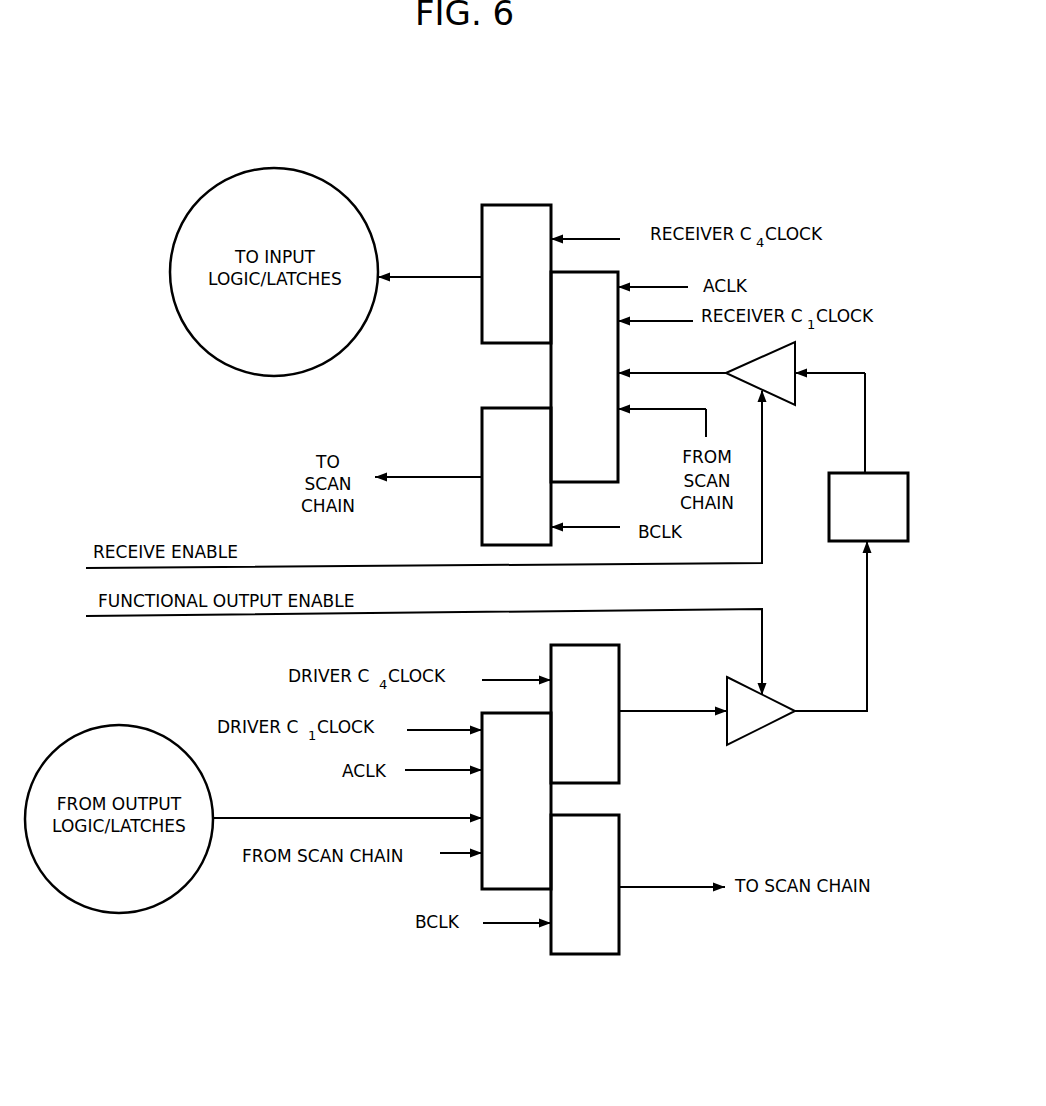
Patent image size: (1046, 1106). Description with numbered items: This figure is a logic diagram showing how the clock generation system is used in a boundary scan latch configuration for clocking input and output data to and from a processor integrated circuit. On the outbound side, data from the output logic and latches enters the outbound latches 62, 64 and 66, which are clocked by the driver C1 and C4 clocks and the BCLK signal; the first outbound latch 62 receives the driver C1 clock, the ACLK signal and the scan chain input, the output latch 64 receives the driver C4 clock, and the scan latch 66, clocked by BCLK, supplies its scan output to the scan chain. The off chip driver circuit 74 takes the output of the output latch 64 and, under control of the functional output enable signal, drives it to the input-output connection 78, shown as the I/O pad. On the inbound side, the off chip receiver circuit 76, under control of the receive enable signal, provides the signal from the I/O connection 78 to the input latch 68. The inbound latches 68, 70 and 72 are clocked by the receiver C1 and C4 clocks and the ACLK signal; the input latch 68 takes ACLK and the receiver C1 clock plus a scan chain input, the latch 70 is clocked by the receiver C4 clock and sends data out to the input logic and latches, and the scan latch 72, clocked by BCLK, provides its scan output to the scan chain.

The outbound latch 62 is at (482, 873).
The outbound latch 64 is at (619, 668).
The outbound latch 66 is at (619, 836).
The inbound latch 68 is at (620, 278).
The inbound latch 70 is at (528, 205).
The inbound latch 72 is at (482, 428).
The off chip driver circuit 74 is at (763, 727).
The off chip receiver circuit 76 is at (797, 360).
The input-output connection 78 is at (885, 468).